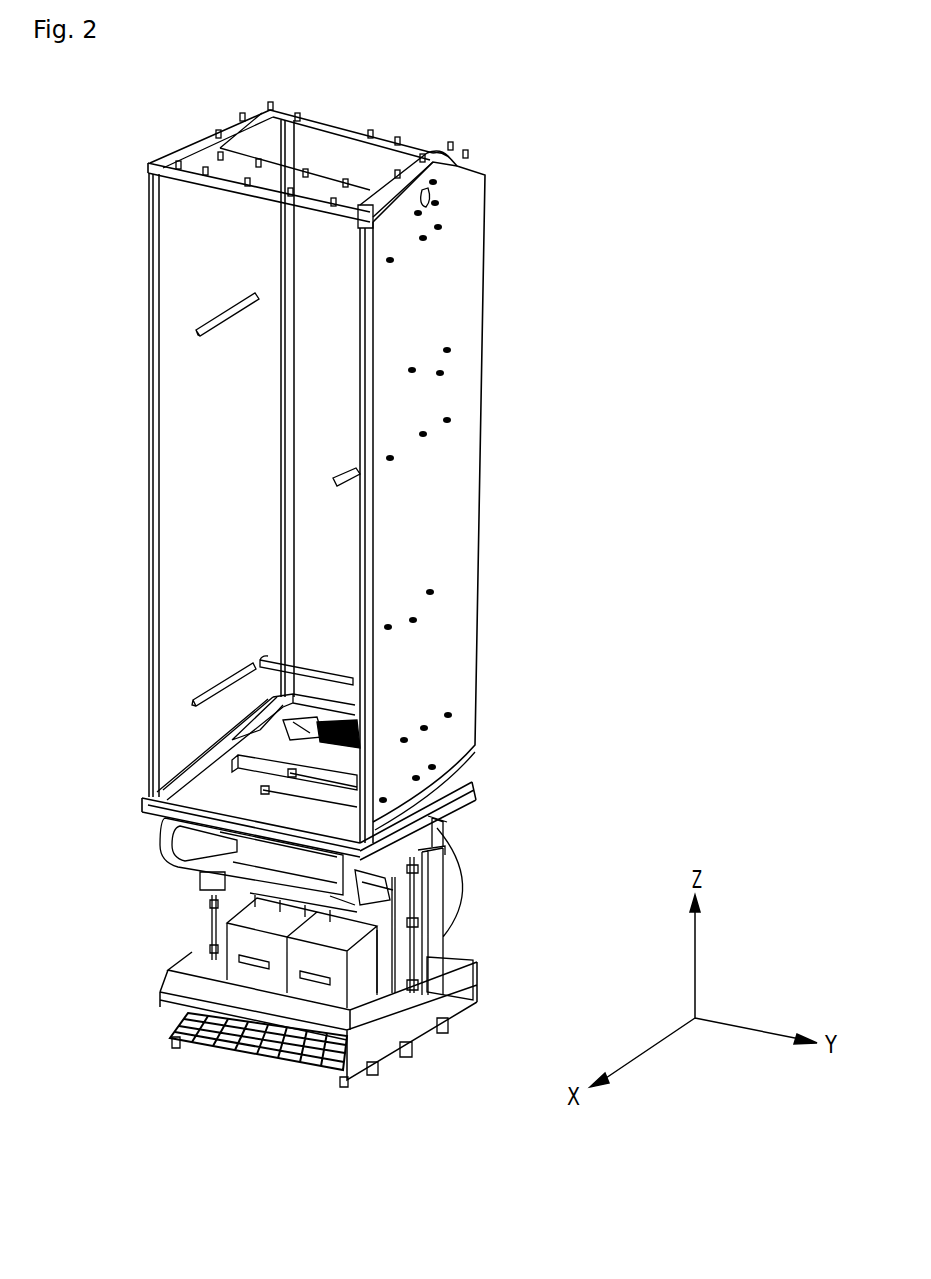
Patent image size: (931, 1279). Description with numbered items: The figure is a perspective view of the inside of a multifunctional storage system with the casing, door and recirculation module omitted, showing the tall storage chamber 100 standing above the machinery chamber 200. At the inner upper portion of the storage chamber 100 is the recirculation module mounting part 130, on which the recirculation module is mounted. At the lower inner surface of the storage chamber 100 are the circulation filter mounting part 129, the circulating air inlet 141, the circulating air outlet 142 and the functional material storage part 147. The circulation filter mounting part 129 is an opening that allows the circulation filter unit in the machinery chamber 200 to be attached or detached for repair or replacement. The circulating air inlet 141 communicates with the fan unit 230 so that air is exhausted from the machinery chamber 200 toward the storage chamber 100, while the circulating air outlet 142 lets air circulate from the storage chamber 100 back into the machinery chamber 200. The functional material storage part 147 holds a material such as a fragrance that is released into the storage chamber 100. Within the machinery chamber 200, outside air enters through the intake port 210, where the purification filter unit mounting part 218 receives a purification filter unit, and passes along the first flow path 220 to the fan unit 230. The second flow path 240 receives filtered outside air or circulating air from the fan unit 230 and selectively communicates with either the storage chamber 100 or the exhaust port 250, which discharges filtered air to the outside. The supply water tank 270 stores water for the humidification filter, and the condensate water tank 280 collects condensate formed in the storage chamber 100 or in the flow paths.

The storage chamber 100 is at (317, 350).
The recirculation module mounting part 130 is at (333, 160).
The circulating air inlet 141 is at (278, 697).
The circulating air outlet 142 is at (350, 777).
The functional material storage part 147 is at (278, 697).
The circulation filter mounting part 129 is at (350, 777).
The exhaust port 250 is at (258, 857).
The supply water tank 270 is at (237, 942).
The intake port 210 is at (220, 1056).
The purification filter unit mounting part 218 is at (293, 1058).
The fan unit 230 is at (458, 885).
The second flow path 240 is at (457, 818).
The first flow path 220 is at (400, 965).
The condensate water tank 280 is at (400, 1003).
The machinery chamber 200 is at (477, 942).